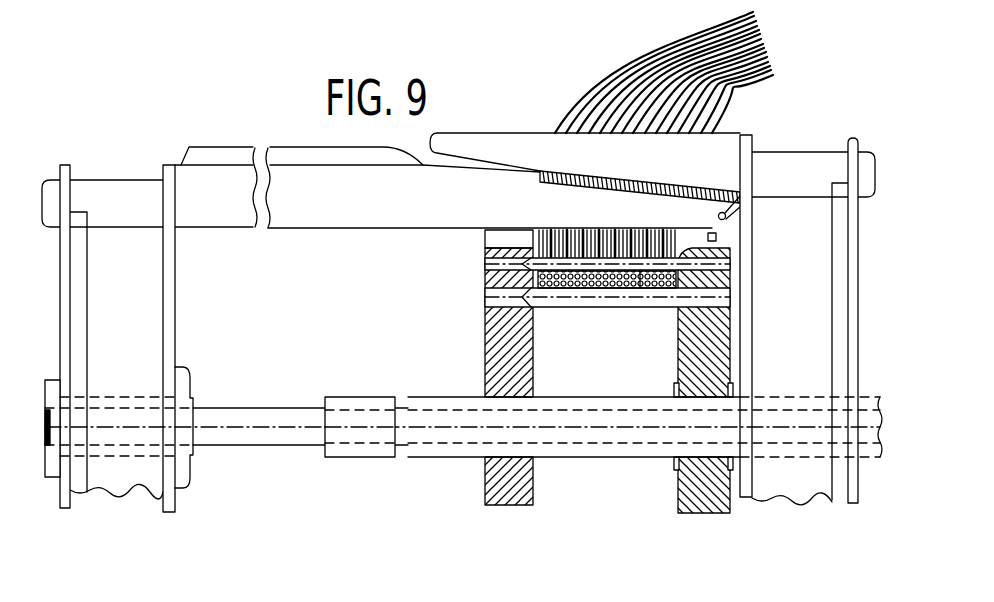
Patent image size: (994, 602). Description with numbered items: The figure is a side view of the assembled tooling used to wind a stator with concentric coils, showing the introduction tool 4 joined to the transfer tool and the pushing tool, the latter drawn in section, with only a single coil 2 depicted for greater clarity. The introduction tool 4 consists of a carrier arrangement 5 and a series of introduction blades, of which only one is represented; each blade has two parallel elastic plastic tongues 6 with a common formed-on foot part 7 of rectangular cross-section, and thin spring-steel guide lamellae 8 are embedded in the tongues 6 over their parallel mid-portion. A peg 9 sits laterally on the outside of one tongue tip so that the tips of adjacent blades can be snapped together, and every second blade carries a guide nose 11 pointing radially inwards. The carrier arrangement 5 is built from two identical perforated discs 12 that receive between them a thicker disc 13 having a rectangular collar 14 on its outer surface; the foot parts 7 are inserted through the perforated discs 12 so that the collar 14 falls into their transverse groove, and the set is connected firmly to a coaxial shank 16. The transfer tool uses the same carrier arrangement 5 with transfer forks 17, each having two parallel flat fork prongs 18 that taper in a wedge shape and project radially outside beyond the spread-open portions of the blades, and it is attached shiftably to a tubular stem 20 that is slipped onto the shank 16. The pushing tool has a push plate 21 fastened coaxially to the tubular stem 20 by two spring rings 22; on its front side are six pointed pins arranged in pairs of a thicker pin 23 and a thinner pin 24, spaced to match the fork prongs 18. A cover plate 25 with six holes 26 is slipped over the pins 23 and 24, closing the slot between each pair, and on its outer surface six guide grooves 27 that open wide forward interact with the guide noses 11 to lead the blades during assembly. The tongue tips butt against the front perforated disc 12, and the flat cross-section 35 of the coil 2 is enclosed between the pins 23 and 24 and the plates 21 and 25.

The coil 2 is at (640, 95).
The introduction tool 4 is at (146, 96).
The carrier arrangement 5 is at (152, 525).
The tongues 6 is at (373, 207).
The foot part 7 is at (125, 195).
The guide lamellae 8 is at (221, 158).
The peg 9 is at (726, 217).
The guide nose 11 is at (718, 238).
The perforated discs 12 is at (66, 277).
The disc 13 is at (115, 478).
The collar 14 is at (88, 318).
The shank 16 is at (270, 437).
The transfer forks 17 is at (531, 124).
The fork prongs 18 is at (493, 143).
The tubular stem 20 is at (368, 437).
The push plate 21 is at (707, 500).
The spring rings 22 is at (680, 462).
The thicker pin 23 is at (555, 306).
The thinner pin 24 is at (598, 276).
The cover plate 25 is at (513, 490).
The holes 26 is at (485, 296).
The guide grooves 27 is at (505, 236).
The flat cross-section 35 is at (647, 284).